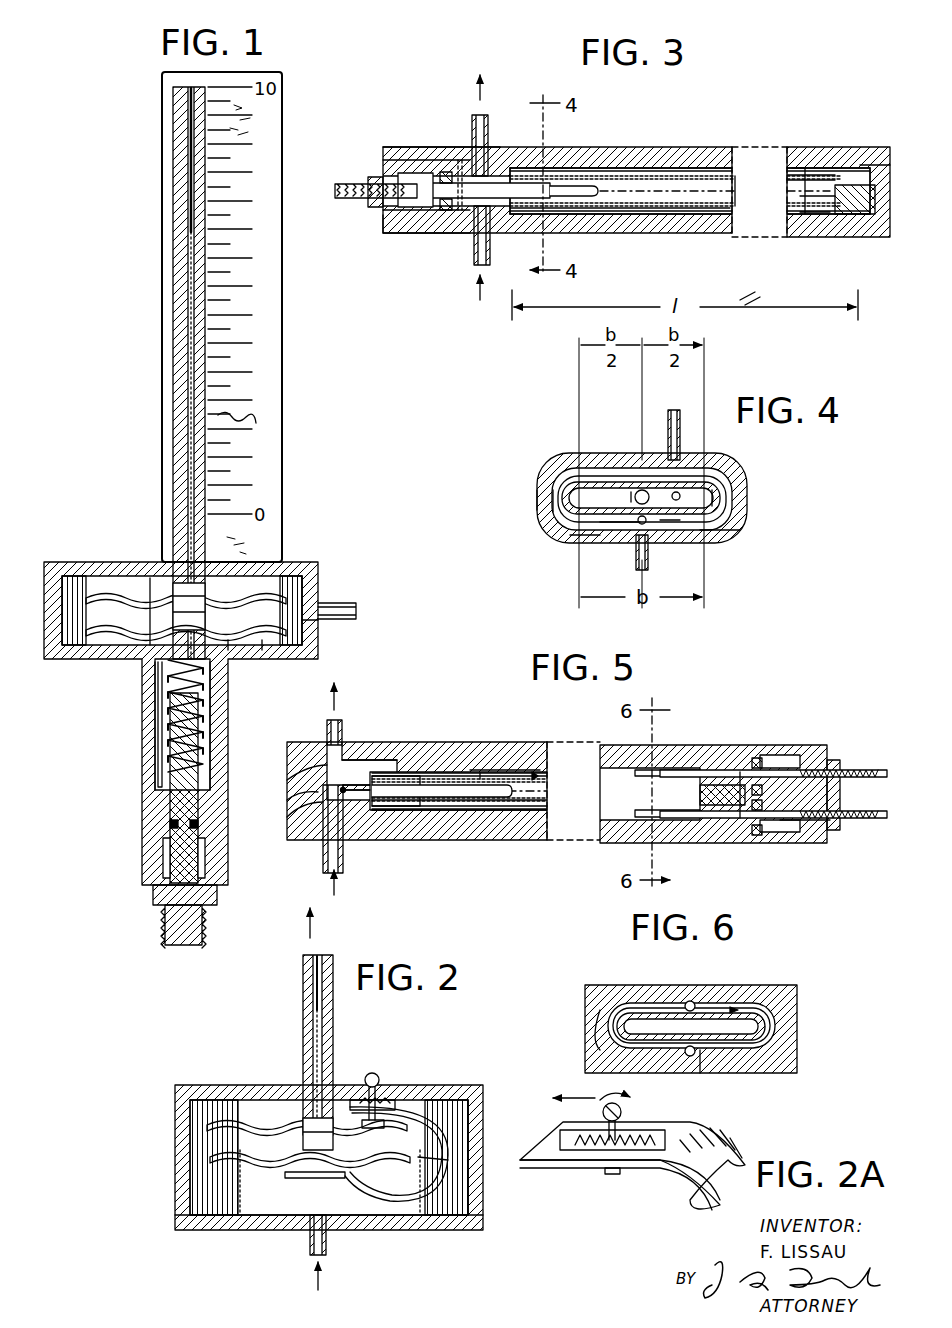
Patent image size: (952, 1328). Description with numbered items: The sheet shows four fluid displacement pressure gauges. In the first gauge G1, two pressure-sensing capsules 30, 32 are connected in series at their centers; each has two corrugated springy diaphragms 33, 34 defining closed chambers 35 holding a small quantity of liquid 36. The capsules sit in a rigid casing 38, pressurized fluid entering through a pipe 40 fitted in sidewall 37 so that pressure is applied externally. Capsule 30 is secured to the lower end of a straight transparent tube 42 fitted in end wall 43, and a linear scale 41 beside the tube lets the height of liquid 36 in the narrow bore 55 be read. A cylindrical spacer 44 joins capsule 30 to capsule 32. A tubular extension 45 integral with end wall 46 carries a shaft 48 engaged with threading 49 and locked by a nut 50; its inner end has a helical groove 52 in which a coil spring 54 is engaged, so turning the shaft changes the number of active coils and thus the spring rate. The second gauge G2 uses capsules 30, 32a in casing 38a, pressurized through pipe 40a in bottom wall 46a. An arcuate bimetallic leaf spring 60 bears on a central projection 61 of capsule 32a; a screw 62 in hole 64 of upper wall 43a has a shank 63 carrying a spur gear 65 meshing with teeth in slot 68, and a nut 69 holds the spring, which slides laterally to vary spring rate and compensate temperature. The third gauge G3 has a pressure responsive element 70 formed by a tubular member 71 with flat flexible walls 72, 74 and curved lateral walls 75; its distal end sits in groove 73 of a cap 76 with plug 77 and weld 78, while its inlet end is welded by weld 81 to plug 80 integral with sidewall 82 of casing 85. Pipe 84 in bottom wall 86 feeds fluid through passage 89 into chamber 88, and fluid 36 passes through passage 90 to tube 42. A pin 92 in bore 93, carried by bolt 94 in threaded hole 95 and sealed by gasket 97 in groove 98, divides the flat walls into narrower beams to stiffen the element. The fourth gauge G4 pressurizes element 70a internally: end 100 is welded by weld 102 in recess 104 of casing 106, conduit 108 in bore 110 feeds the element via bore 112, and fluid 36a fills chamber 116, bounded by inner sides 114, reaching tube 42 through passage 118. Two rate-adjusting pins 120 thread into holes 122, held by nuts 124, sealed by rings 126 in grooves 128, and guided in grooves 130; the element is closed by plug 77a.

In FIG. 1, the pressure-sensing capsule 30 is at (268, 585).
In FIG. 2, the pressure-sensing capsule 30 is at (420, 1100).
In FIG. 1, the pressure-sensing capsule 32 is at (244, 642).
In FIG. 2, the aneroid capsule 32a is at (190, 1160).
In FIG. 1, the diaphragm 33 is at (88, 640).
In FIG. 1, the diaphragm 34 is at (100, 634).
In FIG. 1, the chamber 35 is at (230, 648).
In FIG. 1, the liquid 36 is at (158, 664).
In FIG. 3, the liquid 36 is at (646, 162).
In FIG. 2, the liquid 36 is at (313, 1035).
In FIG. 5, the fluid 36a is at (335, 765).
In FIG. 6, the fluid 36a is at (750, 1052).
In FIG. 1, the sidewall 37 is at (320, 625).
In FIG. 1, the casing 38 is at (320, 585).
In FIG. 2, the casing 38a is at (483, 1215).
In FIG. 1, the pipe 40 is at (412, 609).
In FIG. 2, the pipe 40a is at (312, 1245).
In FIG. 1, the linear scale 41 is at (237, 451).
In FIG. 1, the transparent tube 42 is at (172, 450).
In FIG. 3, the transparent tube 42 is at (487, 120).
In FIG. 4, the transparent tube 42 is at (668, 432).
In FIG. 5, the transparent tube 42 is at (328, 726).
In FIG. 2, the transparent tube 42 is at (304, 1012).
In FIG. 1, the end wall 43 is at (102, 578).
In FIG. 2, the upper wall 43a is at (292, 1085).
In FIG. 1, the cylindrical spacer 44 is at (150, 578).
In FIG. 2, the cylindrical spacer 44 is at (232, 1100).
In FIG. 1, the tubular extension 45 is at (155, 720).
In FIG. 1, the end wall 46 is at (265, 648).
In FIG. 2, the bottom wall 46a is at (212, 1222).
In FIG. 1, the shaft 48 is at (178, 790).
In FIG. 1, the threading 49 is at (212, 870).
In FIG. 1, the nut 50 is at (218, 895).
In FIG. 1, the helical groove 52 is at (168, 760).
In FIG. 1, the coil spring 54 is at (158, 700).
In FIG. 1, the bore 55 is at (189, 162).
In FIG. 2, the bore 55 is at (306, 975).
In FIG. 2, the arcuate leaf spring 60 is at (455, 1115).
In FIG. 2A, the arcuate leaf spring 60 is at (712, 1205).
In FIG. 2, the central projection 61 is at (300, 1178).
In FIG. 2, the screw 62 is at (374, 1072).
In FIG. 2A, the screw 62 is at (606, 1105).
In FIG. 2, the shank 63 is at (364, 1118).
In FIG. 2A, the shank 63 is at (618, 1128).
In FIG. 2, the hole 64 is at (376, 1090).
In FIG. 2, the spur gear 65 is at (385, 1100).
In FIG. 2A, the spur gear 65 is at (612, 1148).
In FIG. 2, the slot 68 is at (400, 1100).
In FIG. 2A, the slot 68 is at (665, 1135).
In FIG. 2, the nut 69 is at (430, 1150).
In FIG. 2A, the nut 69 is at (612, 1175).
In FIG. 3, the pressure responsive element 70 is at (805, 225).
In FIG. 4, the pressure responsive element 70 is at (553, 535).
In FIG. 5, the pressure-sensing element 70a is at (500, 770).
In FIG. 6, the pressure-sensing element 70a is at (790, 1005).
In FIG. 3, the tubular member 71 is at (794, 178).
In FIG. 4, the tubular member 71 is at (632, 492).
In FIG. 5, the tubular member 71 is at (492, 774).
In FIG. 6, the tubular member 71 is at (760, 1012).
In FIG. 3, the flat flexible wall 72 is at (700, 178).
In FIG. 4, the flat flexible wall 72 is at (622, 484).
In FIG. 5, the flat flexible wall 72 is at (445, 780).
In FIG. 6, the flat flexible wall 72 is at (640, 1010).
In FIG. 3, the groove 73 is at (866, 168).
In FIG. 3, the flat flexible wall 74 is at (736, 216).
In FIG. 4, the flat flexible wall 74 is at (622, 524).
In FIG. 5, the flat flexible wall 74 is at (525, 812).
In FIG. 6, the flat flexible wall 74 is at (608, 1038).
In FIG. 3, the curved lateral wall 75 is at (820, 214).
In FIG. 4, the curved lateral wall 75 is at (713, 498).
In FIG. 3, the cap 76 is at (883, 220).
In FIG. 3, the plug 77 is at (828, 212).
In FIG. 5, the plug 77a is at (740, 785).
In FIG. 6, the plug 77a is at (665, 1030).
In FIG. 3, the continuous weld 78 is at (845, 170).
In FIG. 3, the plug 80 is at (636, 192).
In FIG. 4, the plug 80 is at (552, 490).
In FIG. 3, the continuous weld 81 is at (530, 165).
In FIG. 4, the continuous weld 81 is at (550, 468).
In FIG. 3, the sidewall 82 is at (466, 216).
In FIG. 4, the sidewall 82 is at (556, 478).
In FIG. 3, the pipe 84 is at (475, 250).
In FIG. 4, the pipe 84 is at (648, 555).
In FIG. 3, the casing 85 is at (402, 150).
In FIG. 4, the casing 85 is at (556, 506).
In FIG. 3, the bottom wall 86 is at (384, 180).
In FIG. 4, the bottom wall 86 is at (580, 540).
In FIG. 3, the chamber 88 is at (680, 216).
In FIG. 4, the chamber 88 is at (712, 540).
In FIG. 3, the passage 89 is at (518, 235).
In FIG. 4, the passage 89 is at (641, 525).
In FIG. 3, the passage 90 is at (556, 152).
In FIG. 4, the passage 90 is at (680, 498).
In FIG. 3, the pin 92 is at (440, 210).
In FIG. 4, the pin 92 is at (642, 490).
In FIG. 3, the bore 93 is at (463, 172).
In FIG. 4, the bore 93 is at (662, 522).
In FIG. 3, the threaded bolt 94 is at (345, 186).
In FIG. 3, the threaded hole 95 is at (385, 212).
In FIG. 3, the sealing ring gasket 97 is at (446, 172).
In FIG. 3, the groove 98 is at (432, 214).
In FIG. 5, the end 100 is at (390, 760).
In FIG. 5, the weld 102 is at (385, 812).
In FIG. 5, the recess 104 is at (370, 830).
In FIG. 5, the casing 106 is at (312, 840).
In FIG. 5, the conduit 108 is at (326, 868).
In FIG. 5, the bore 110 is at (316, 836).
In FIG. 5, the bore 112 is at (322, 790).
In FIG. 5, the inner side 114 is at (420, 776).
In FIG. 6, the inner side 114 is at (622, 1005).
In FIG. 5, the chamber 116 is at (540, 775).
In FIG. 6, the chamber 116 is at (735, 1010).
In FIG. 5, the passage 118 is at (385, 775).
In FIG. 5, the rate-adjusting pin 120 is at (838, 790).
In FIG. 6, the rate-adjusting pin 120 is at (694, 1056).
In FIG. 5, the threaded hole 122 is at (810, 748).
In FIG. 5, the nut 124 is at (832, 832).
In FIG. 5, the sealing ring 126 is at (758, 836).
In FIG. 5, the groove 128 is at (752, 840).
In FIG. 5, the groove 130 is at (660, 770).
In FIG. 6, the groove 130 is at (692, 1002).
In FIG. 1, the fluid displacement pressure gauge G1 is at (298, 382).
In FIG. 2, the pressure gauge G2 is at (248, 1040).
In FIG. 3, the pressure gauge G3 is at (758, 115).
In FIG. 4, the pressure gauge G3 is at (772, 538).
In FIG. 5, the fluid displacement pressure gauge G4 is at (795, 728).
In FIG. 6, the fluid displacement pressure gauge G4 is at (812, 1031).